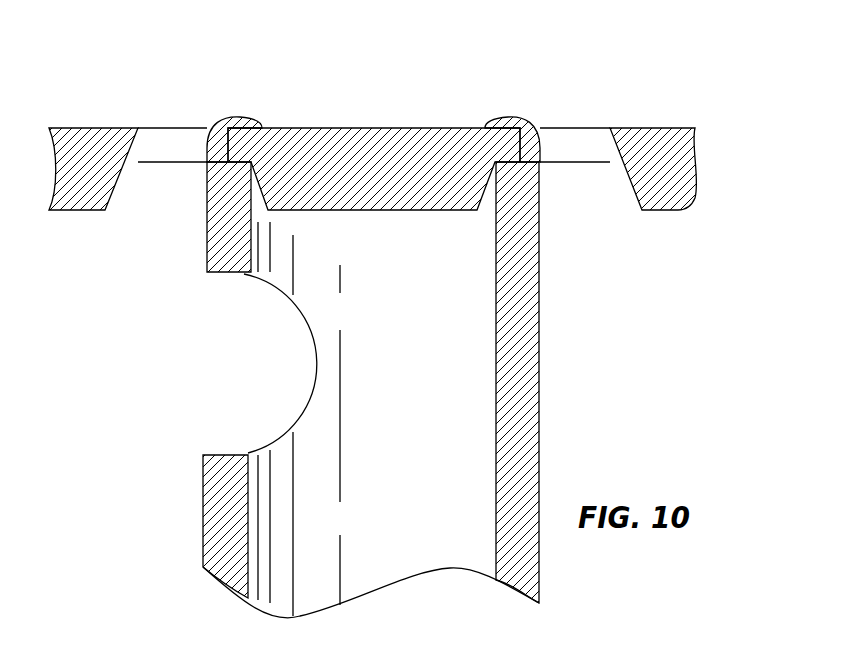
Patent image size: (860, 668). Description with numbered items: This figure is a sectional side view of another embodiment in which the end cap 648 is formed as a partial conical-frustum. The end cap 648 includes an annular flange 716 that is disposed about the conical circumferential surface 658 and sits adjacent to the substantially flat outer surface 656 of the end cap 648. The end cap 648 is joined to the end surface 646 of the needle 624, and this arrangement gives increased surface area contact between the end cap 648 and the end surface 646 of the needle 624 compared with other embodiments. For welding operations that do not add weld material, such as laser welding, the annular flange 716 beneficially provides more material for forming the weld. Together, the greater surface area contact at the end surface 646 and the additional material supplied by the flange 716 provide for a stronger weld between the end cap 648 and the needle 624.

The needle 624 is at (526, 425).
The end surface 646 is at (208, 177).
The end cap 648 is at (385, 148).
The substantially flat outer surface 656 is at (300, 128).
The conical circumferential surface 658 is at (267, 206).
The annular flange 716 is at (503, 148).